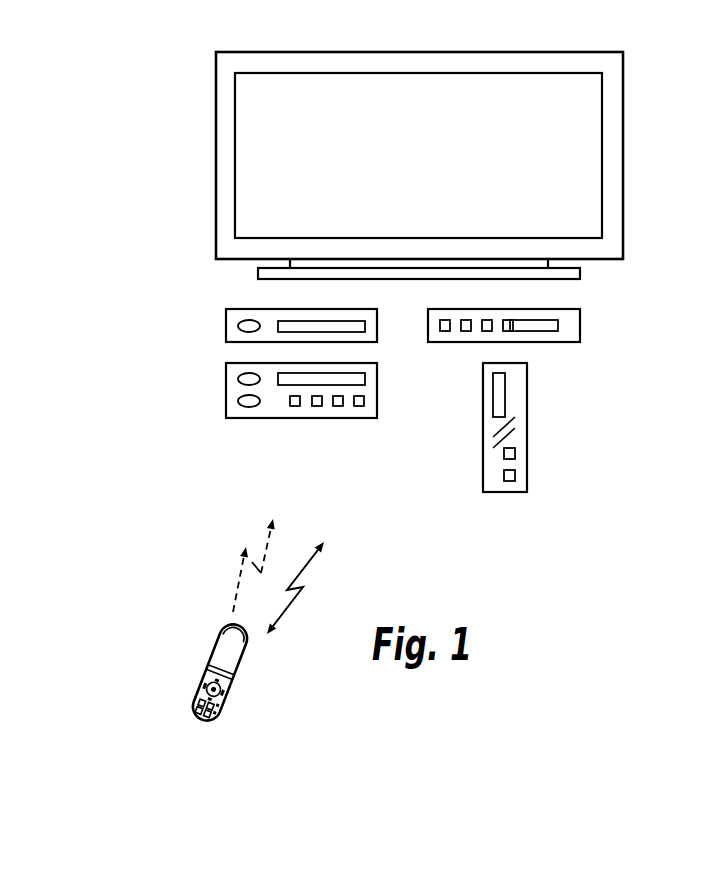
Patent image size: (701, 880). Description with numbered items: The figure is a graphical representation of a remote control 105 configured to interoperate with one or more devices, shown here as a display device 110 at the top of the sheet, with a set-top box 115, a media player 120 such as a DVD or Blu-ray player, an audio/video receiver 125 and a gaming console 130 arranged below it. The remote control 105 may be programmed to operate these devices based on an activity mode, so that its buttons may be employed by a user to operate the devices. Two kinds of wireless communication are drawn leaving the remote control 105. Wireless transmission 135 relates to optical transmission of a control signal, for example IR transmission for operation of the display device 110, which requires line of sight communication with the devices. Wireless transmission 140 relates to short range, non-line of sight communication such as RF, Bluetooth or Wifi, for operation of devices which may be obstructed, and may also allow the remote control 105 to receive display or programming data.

The remote control 105 is at (234, 676).
The display device 110 is at (623, 63).
The set-top box 115 is at (225, 328).
The media player 120 is at (582, 328).
The audio/video receiver 125 is at (313, 422).
The gaming console 130 is at (528, 458).
The wireless transmission 135 is at (241, 565).
The wireless transmission 140 is at (306, 588).